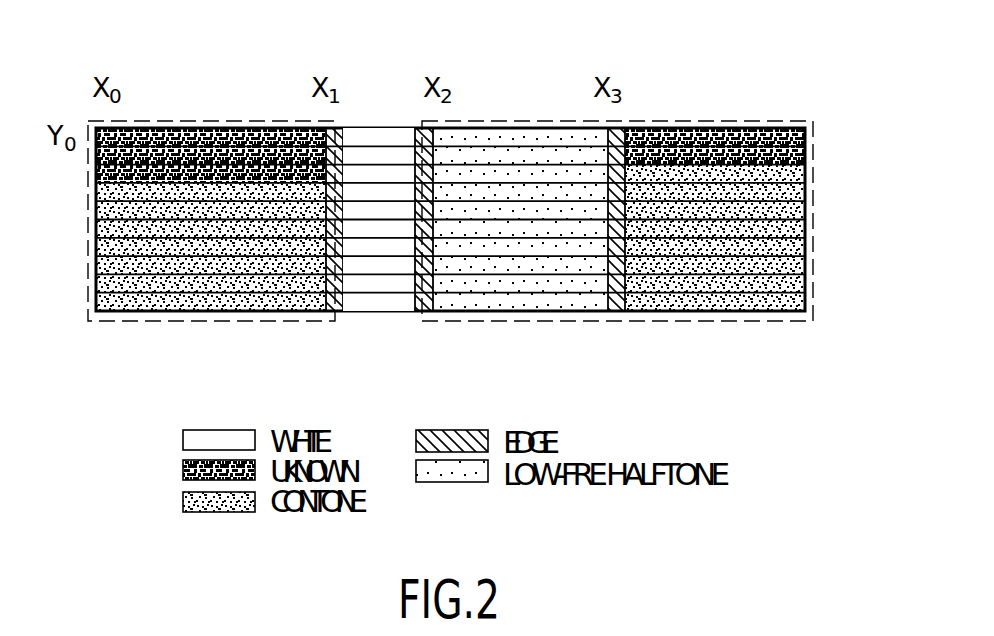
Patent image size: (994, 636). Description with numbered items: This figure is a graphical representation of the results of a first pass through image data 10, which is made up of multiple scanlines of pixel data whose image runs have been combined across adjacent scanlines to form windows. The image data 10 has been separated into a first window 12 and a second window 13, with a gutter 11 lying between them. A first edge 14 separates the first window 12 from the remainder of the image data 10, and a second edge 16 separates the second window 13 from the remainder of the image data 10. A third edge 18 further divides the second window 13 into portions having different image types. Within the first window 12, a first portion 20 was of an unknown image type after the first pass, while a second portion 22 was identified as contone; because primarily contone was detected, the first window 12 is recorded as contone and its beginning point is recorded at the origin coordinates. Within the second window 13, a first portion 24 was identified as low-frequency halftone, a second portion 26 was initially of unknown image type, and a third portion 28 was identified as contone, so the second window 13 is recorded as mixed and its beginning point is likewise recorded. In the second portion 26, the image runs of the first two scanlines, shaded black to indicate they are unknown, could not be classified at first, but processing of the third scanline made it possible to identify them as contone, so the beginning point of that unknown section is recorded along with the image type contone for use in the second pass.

The image data 10 is at (78, 108).
The gutter 11 is at (382, 140).
The first window 12 is at (223, 111).
The second window 13 is at (550, 113).
The first edge 14 is at (343, 312).
The second edge 16 is at (418, 312).
The third edge 18 is at (622, 312).
The first portion of the first window 20 is at (100, 150).
The second portion of the first window 22 is at (112, 248).
The first portion of the second window 24 is at (497, 150).
The second portion of the second window 26 is at (752, 143).
The third portion of the second window 28 is at (788, 285).